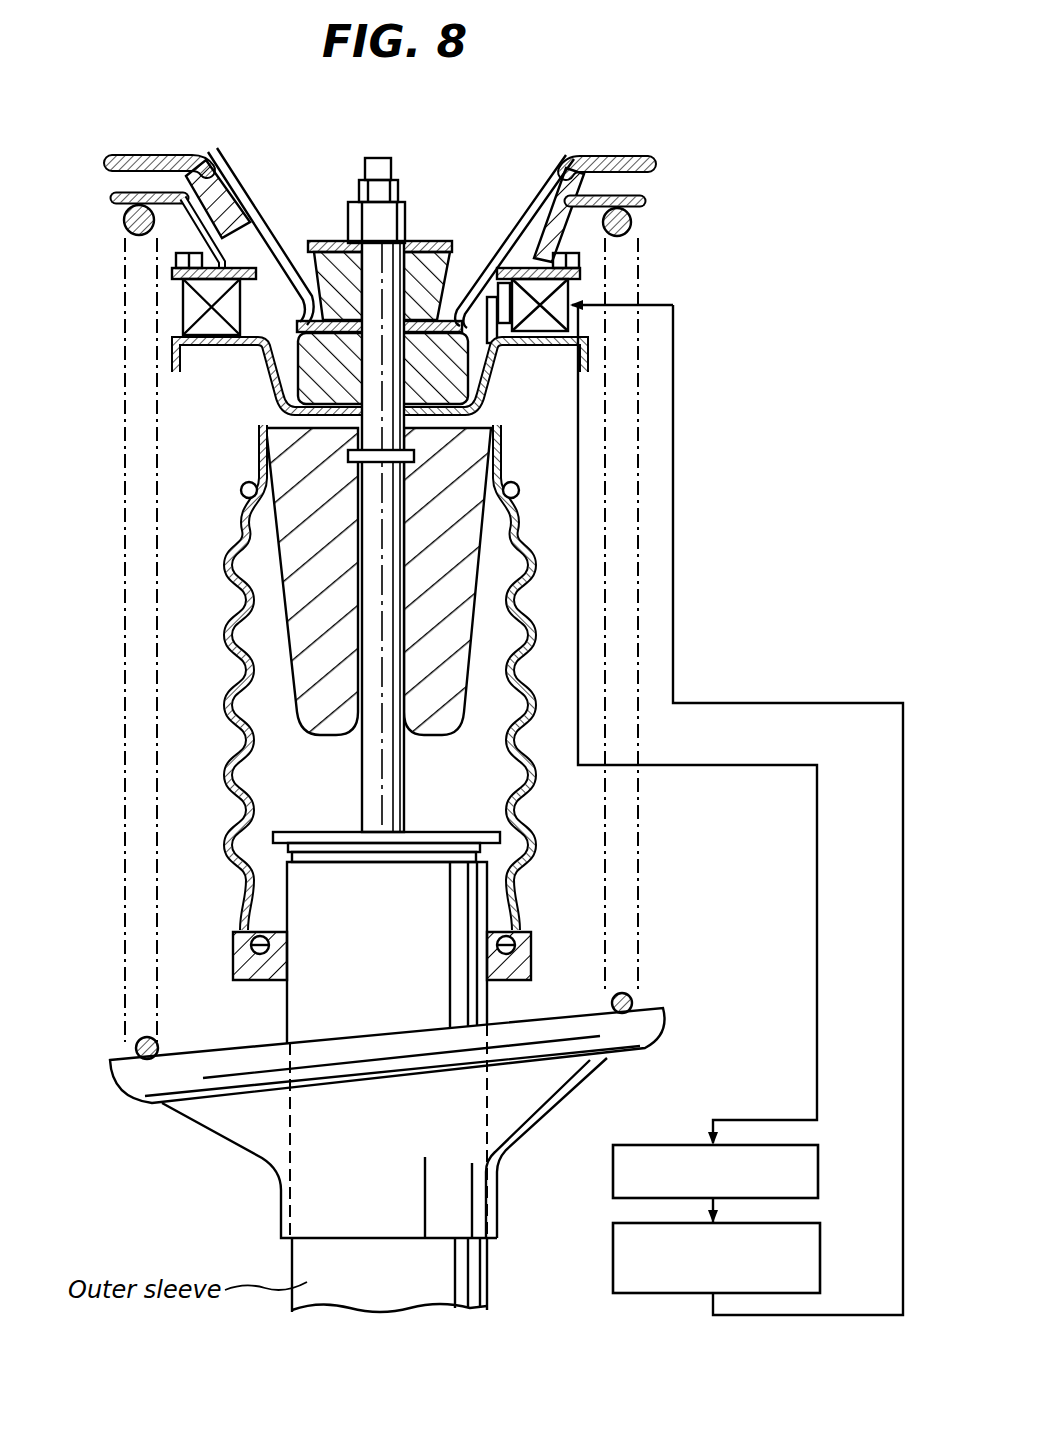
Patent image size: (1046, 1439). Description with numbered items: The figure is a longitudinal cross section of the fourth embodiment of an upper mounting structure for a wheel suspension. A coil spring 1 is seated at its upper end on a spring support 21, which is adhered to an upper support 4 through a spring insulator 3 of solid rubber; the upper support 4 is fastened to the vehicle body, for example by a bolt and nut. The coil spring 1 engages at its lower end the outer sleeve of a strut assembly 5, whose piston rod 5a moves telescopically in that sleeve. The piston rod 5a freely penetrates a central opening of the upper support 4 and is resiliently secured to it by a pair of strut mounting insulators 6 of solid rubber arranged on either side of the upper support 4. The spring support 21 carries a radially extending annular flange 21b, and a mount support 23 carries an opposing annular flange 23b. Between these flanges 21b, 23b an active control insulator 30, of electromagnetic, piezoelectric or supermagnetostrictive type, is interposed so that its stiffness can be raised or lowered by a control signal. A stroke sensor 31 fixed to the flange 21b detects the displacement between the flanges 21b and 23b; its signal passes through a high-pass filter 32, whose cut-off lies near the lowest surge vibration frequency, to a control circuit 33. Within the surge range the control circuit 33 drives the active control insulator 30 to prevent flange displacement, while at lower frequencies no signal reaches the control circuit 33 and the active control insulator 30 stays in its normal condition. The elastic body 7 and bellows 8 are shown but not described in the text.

The coil spring 1 is at (122, 228).
The spring insulator 3 is at (213, 173).
The upper support 4 is at (240, 198).
The strut assembly 5 is at (384, 272).
The piston rod 5a is at (413, 180).
The strut mounting insulators 6 is at (434, 280).
The elastic rubber body 7 is at (452, 677).
The dust boot bellows 8 is at (531, 588).
The spring support 21 is at (117, 193).
The annular flange 21b is at (173, 268).
The mount support 23 is at (267, 403).
The annular flange 23b is at (220, 350).
The active control insulator 30 is at (578, 290).
The stroke sensor 31 is at (502, 350).
The high-pass filter 32 is at (612, 1170).
The control circuit 33 is at (612, 1260).